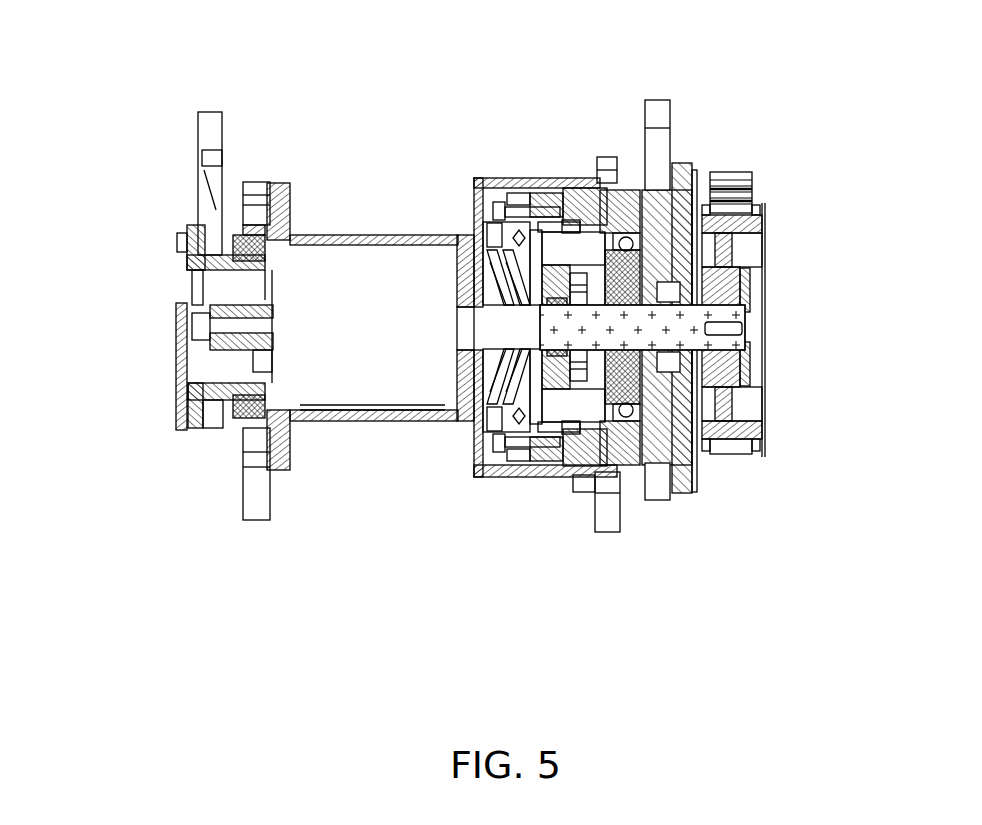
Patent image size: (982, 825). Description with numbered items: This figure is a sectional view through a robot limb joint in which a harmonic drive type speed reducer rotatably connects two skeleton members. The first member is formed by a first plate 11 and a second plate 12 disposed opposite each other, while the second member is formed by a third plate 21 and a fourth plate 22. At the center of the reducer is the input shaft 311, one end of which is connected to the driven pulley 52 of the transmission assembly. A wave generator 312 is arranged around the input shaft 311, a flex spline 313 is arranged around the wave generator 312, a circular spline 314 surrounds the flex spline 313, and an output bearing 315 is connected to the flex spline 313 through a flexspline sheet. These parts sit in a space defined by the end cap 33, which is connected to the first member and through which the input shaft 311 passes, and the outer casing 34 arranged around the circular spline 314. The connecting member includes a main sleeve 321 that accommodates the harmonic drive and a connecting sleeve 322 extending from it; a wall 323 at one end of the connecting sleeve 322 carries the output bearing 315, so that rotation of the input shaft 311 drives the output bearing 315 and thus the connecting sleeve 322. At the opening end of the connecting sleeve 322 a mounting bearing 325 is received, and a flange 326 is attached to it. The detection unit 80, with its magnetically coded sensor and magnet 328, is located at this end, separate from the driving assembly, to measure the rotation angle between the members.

The first plate 11 is at (655, 145).
The second plate 12 is at (212, 212).
The third plate 21 is at (608, 515).
The fourth plate 22 is at (257, 198).
The end cap 33 is at (694, 190).
The outer casing 34 is at (648, 470).
The driven pulley 52 is at (692, 388).
The detection unit 80 is at (177, 352).
The input shaft 311 is at (690, 290).
The wave generator 312 is at (595, 250).
The flex spline 313 is at (575, 210).
The circular spline 314 is at (640, 192).
The output bearing 315 is at (497, 245).
The main sleeve 321 is at (522, 470).
The connecting sleeve 322 is at (395, 234).
The wall 323 is at (475, 365).
The mounting bearing 325 is at (242, 413).
The flange 326 is at (184, 246).
The magnet 328 is at (205, 312).